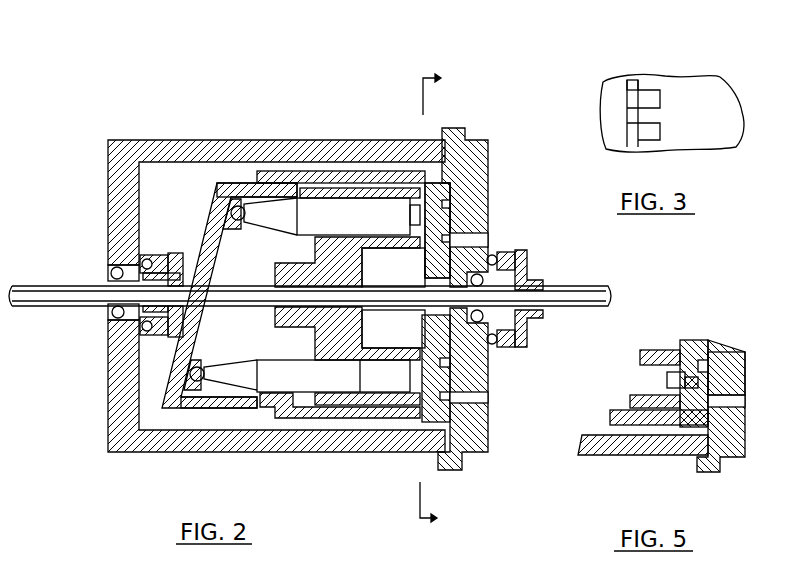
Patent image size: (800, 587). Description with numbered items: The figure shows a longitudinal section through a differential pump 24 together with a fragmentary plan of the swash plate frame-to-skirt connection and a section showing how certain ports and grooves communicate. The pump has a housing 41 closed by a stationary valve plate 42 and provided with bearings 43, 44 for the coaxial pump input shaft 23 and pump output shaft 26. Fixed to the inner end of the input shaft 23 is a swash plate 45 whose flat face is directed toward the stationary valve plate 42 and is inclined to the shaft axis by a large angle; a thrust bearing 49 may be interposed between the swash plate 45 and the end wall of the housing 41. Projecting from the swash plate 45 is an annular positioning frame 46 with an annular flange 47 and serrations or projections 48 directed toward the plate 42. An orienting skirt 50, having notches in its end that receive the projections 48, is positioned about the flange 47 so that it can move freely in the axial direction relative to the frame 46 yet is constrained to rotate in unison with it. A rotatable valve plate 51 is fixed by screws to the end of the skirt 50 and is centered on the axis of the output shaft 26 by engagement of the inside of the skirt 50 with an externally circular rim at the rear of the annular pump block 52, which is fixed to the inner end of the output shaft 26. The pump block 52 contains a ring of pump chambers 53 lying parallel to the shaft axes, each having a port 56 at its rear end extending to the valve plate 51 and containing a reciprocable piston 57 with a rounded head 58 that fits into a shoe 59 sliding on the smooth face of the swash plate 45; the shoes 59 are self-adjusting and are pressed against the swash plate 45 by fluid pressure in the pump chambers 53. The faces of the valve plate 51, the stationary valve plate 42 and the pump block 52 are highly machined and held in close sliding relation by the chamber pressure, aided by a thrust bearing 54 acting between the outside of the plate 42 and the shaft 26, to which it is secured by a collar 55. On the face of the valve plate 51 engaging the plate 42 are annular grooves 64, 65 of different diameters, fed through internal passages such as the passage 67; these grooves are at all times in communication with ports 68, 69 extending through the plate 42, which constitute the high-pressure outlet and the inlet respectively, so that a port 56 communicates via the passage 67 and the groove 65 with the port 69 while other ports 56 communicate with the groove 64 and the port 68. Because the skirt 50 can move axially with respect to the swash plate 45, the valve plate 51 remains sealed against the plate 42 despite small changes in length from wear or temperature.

In FIG. 2, the pump input shaft 23 is at (53, 285).
In FIG. 2, the axial piston machine 24 is at (339, 111).
In FIG. 2, the pump output shaft 26 is at (595, 292).
In FIG. 2, the housing 41 is at (181, 140).
In FIG. 5, the housing 41 is at (666, 454).
In FIG. 2, the stationary valve plate 42 is at (486, 153).
In FIG. 5, the stationary valve plate 42 is at (746, 436).
In FIG. 2, the bearing 43 is at (110, 313).
In FIG. 2, the bearing 44 is at (485, 280).
In FIG. 2, the swash plate 45 is at (196, 305).
In FIG. 2, the annular positioning frame 46 is at (240, 406).
In FIG. 3, the annular positioning frame 46 is at (604, 108).
In FIG. 2, the annular flange 47 is at (281, 399).
In FIG. 3, the annular flange 47 is at (636, 73).
In FIG. 2, the serrations or projections 48 is at (257, 181).
In FIG. 3, the serrations or projections 48 is at (655, 95).
In FIG. 2, the thrust bearing 49 is at (155, 254).
In FIG. 2, the orienting skirt 50 is at (318, 172).
In FIG. 3, the orienting skirt 50 is at (740, 108).
In FIG. 2, the rotatable valve plate 51 is at (453, 181).
In FIG. 5, the rotatable valve plate 51 is at (700, 340).
In FIG. 2, the annular cylinder or pump block 52 is at (315, 340).
In FIG. 2, the pump chambers 53 is at (407, 217).
In FIG. 2, the thrust bearing 54 is at (502, 252).
In FIG. 2, the collar 55 is at (527, 265).
In FIG. 2, the port 56 is at (412, 251).
In FIG. 5, the port 56 is at (670, 376).
In FIG. 2, the reciprocable piston 57 is at (308, 231).
In FIG. 2, the rounded head 58 is at (243, 220).
In FIG. 2, the shoe 59 is at (226, 229).
In FIG. 2, the annular groove 64 is at (442, 240).
In FIG. 2, the annular groove 65 is at (450, 205).
In FIG. 5, the annular groove 65 is at (735, 386).
In FIG. 5, the internal passage 67 is at (683, 352).
In FIG. 2, the port 68 is at (483, 238).
In FIG. 2, the port 69 is at (470, 399).
In FIG. 5, the port 69 is at (740, 401).